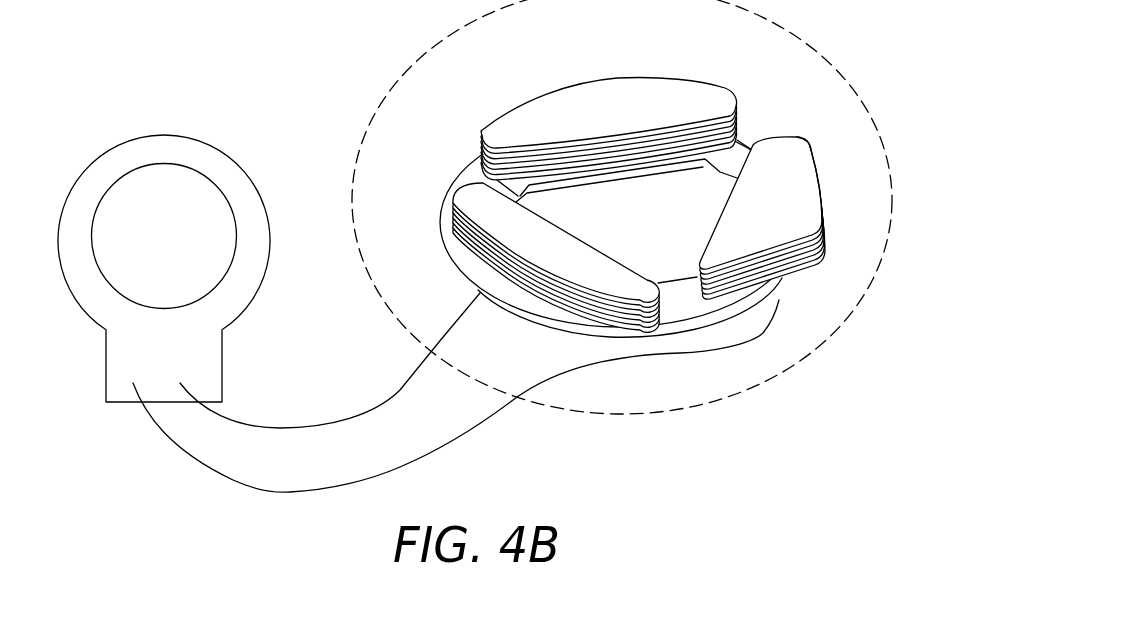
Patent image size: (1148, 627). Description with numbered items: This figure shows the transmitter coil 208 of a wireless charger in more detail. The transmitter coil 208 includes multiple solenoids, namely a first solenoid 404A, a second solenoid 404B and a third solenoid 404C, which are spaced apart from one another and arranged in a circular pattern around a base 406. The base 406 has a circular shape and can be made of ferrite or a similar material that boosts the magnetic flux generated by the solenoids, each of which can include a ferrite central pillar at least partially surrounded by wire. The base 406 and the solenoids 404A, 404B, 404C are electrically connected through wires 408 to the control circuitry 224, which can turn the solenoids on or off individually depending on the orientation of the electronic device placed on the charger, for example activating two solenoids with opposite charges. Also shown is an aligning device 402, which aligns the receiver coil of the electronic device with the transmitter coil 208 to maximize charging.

The control circuitry 224 is at (158, 145).
The aligning device 402 is at (192, 218).
The first solenoid 404A is at (697, 93).
The second solenoid 404B is at (475, 202).
The third solenoid 404C is at (807, 210).
The base 406 is at (468, 175).
The wires 408 is at (277, 428).
The transmitter coil 208 is at (807, 150).